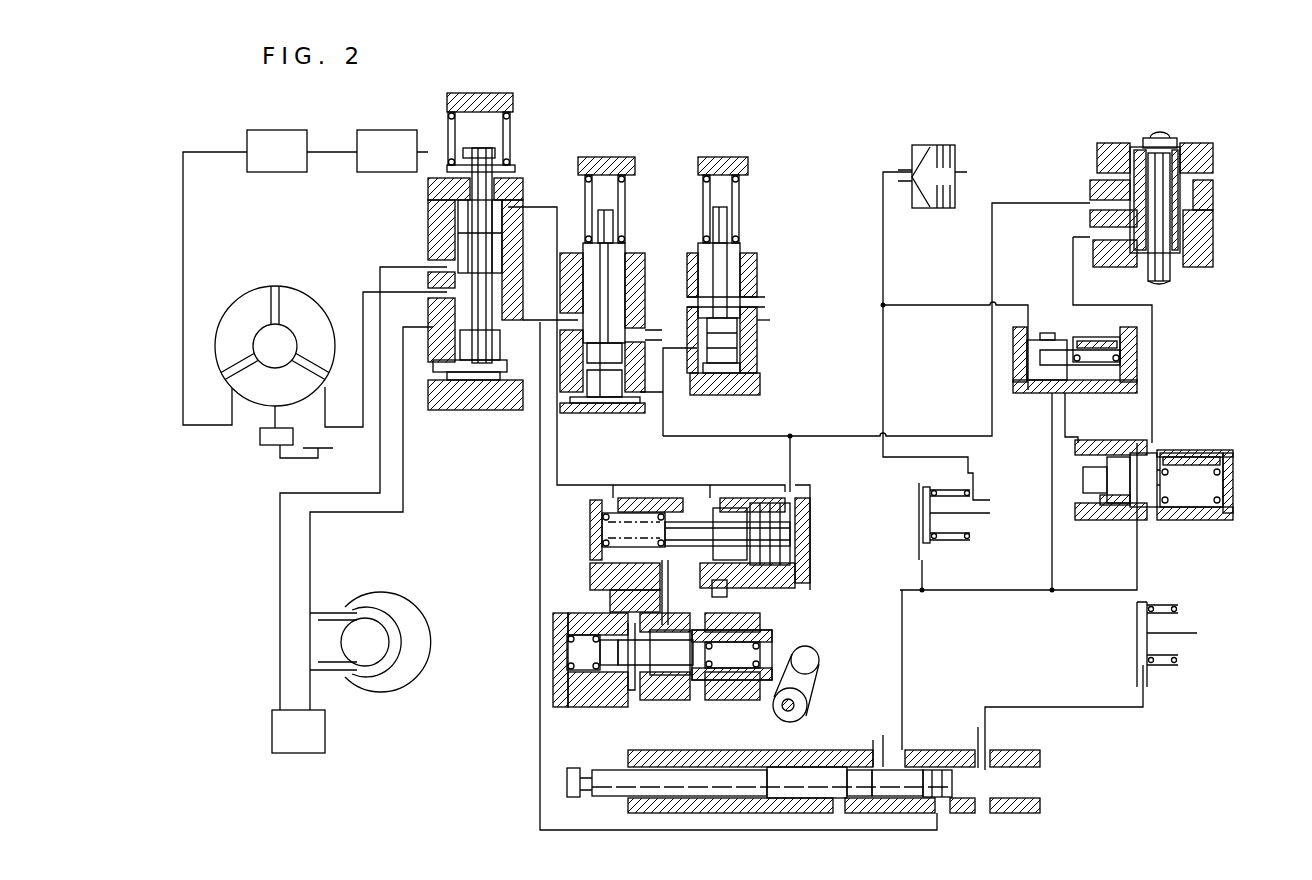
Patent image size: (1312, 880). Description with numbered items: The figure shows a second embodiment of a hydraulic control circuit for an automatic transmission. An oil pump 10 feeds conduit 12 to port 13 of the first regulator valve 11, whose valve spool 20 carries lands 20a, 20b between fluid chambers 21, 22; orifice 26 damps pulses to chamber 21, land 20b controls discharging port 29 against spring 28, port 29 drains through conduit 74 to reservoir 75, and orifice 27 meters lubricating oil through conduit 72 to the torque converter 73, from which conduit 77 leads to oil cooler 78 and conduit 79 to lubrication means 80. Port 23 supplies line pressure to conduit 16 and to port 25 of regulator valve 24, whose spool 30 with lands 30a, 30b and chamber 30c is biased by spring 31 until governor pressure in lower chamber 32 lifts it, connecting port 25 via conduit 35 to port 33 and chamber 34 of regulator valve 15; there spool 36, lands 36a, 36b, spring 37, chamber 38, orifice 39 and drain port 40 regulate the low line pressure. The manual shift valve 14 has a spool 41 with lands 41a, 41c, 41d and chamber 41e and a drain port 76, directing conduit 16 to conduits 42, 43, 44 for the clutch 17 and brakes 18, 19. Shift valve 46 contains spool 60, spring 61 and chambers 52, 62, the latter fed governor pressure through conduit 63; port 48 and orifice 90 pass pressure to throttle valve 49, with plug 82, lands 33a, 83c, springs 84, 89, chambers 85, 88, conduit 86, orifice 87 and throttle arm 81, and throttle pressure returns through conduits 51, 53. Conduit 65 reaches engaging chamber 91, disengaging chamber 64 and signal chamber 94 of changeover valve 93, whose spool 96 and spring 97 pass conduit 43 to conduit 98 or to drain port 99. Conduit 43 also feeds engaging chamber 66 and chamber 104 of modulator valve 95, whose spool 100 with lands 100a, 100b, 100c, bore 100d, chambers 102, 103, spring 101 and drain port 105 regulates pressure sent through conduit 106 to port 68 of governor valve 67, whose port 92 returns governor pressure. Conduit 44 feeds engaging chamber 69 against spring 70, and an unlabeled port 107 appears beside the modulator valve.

The oil pump 10 is at (427, 602).
The first regulator valve 11 is at (567, 126).
The conduit 12 is at (310, 547).
The port 13 is at (440, 320).
The manual shift valve 14 is at (765, 732).
The regulator valve 15 is at (720, 157).
The conduit 16 is at (553, 654).
The clutch 17 is at (962, 163).
The first brake 18 is at (972, 470).
The second brake 19 is at (1191, 630).
The valve spool 20 is at (485, 175).
The land 20a is at (486, 370).
The land 20b is at (465, 238).
The fluid chamber 21 is at (462, 378).
The fluid chamber 22 is at (440, 203).
The port 23 is at (557, 272).
The regulator valve 24 is at (607, 157).
The port 25 is at (540, 320).
The orifice 26 is at (448, 392).
The orifice 27 is at (447, 292).
The spring 28 is at (447, 150).
The discharging port 29 is at (447, 262).
The valve spool 30 is at (613, 220).
The land 30a is at (612, 385).
The land 30b is at (605, 255).
The chamber 30c is at (630, 370).
The spring 31 is at (625, 192).
The lower chamber 32 is at (580, 400).
The port 33 is at (745, 350).
The land 33a is at (604, 665).
The chamber 34 is at (737, 368).
The conduit 35 is at (656, 355).
The valve spool 36 is at (727, 222).
The land 36a is at (722, 373).
The land 36b is at (725, 262).
The spring 37 is at (739, 190).
The chamber 38 is at (762, 328).
The orifice 39 is at (672, 375).
The drain port 40 is at (757, 302).
The valve spool 41 is at (747, 797).
The land 41a is at (572, 797).
The land 41c is at (790, 798).
The land 41d is at (964, 753).
The chamber 41e is at (882, 760).
The conduit 42 is at (818, 664).
The conduit 43 is at (902, 652).
The conduit 44 is at (1033, 707).
The shift valve 46 is at (800, 520).
The port 48 is at (730, 592).
The throttle valve 49 is at (599, 743).
The conduit 51 is at (605, 560).
The chamber 52 is at (615, 532).
The conduit 53 is at (556, 463).
The valve spool 60 is at (727, 528).
The spring 61 is at (605, 512).
The chamber 62 is at (790, 548).
The conduit 63 is at (690, 436).
The disengaging chamber 64 is at (955, 545).
The conduit 65 is at (883, 360).
The engaging chamber 66 is at (919, 517).
The governor valve 67 is at (1217, 173).
The port 68 is at (1120, 240).
The engaging chamber 69 is at (1137, 640).
The spring 70 is at (1165, 665).
The conduit 72 is at (354, 368).
The torque converter 73 is at (259, 285).
The conduit 74 is at (380, 478).
The fluid reservoir 75 is at (325, 730).
The drain port 76 is at (928, 797).
The conduit 77 is at (183, 230).
The oil cooler 78 is at (277, 172).
The conduit 79 is at (335, 152).
The lubrication means 80 is at (373, 130).
The throttle arm 81 is at (795, 700).
The plug 82 is at (745, 680).
The land 83c is at (705, 690).
The spring 84 is at (570, 675).
The chamber 85 is at (573, 647).
The conduit 86 is at (633, 690).
The orifice 87 is at (668, 675).
The chamber 88 is at (775, 632).
The spring 89 is at (772, 645).
The orifice 90 is at (720, 597).
The engaging chamber 91 is at (922, 208).
The port 92 is at (1097, 197).
The changeover valve 93 is at (1052, 420).
The signal chamber 94 is at (1025, 393).
The modulator valve 95 is at (1220, 462).
The valve spool 96 is at (1053, 333).
The spring 97 is at (1095, 337).
The conduit 98 is at (1078, 437).
The drain port 99 is at (1093, 385).
The valve spool 100 is at (1122, 470).
The land 100a is at (1098, 476).
The land 100b is at (1118, 510).
The land 100c is at (1195, 453).
The bore 100d is at (1140, 498).
The spring 101 is at (1205, 510).
The chamber 102 is at (1088, 490).
The chamber 103 is at (1110, 505).
The chamber 104 is at (1142, 453).
The drain port 105 is at (1163, 507).
The conduit 106 is at (1152, 318).
The port 107 is at (1233, 487).